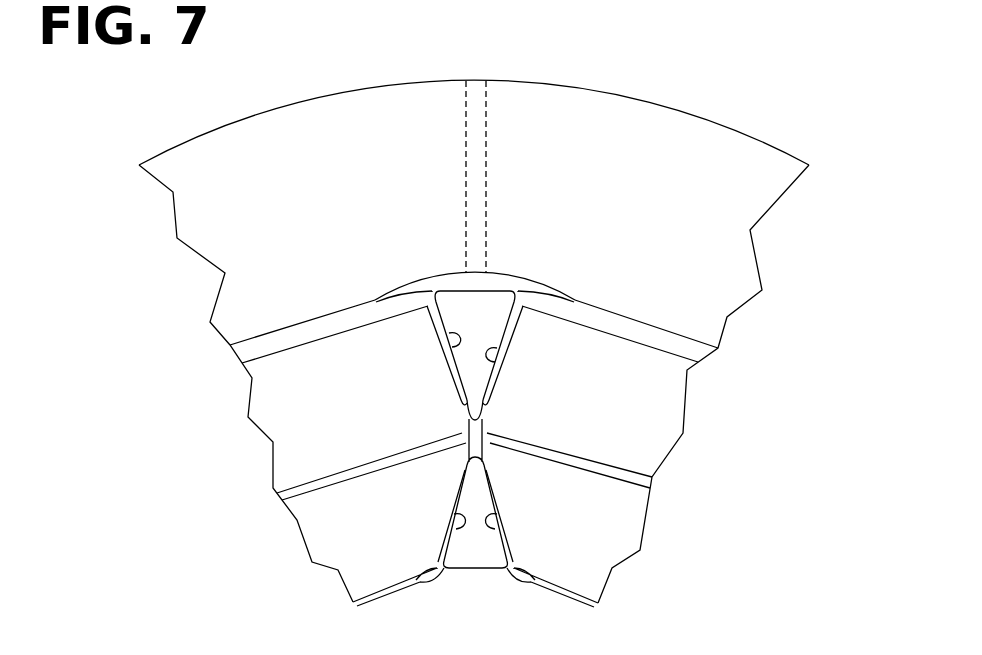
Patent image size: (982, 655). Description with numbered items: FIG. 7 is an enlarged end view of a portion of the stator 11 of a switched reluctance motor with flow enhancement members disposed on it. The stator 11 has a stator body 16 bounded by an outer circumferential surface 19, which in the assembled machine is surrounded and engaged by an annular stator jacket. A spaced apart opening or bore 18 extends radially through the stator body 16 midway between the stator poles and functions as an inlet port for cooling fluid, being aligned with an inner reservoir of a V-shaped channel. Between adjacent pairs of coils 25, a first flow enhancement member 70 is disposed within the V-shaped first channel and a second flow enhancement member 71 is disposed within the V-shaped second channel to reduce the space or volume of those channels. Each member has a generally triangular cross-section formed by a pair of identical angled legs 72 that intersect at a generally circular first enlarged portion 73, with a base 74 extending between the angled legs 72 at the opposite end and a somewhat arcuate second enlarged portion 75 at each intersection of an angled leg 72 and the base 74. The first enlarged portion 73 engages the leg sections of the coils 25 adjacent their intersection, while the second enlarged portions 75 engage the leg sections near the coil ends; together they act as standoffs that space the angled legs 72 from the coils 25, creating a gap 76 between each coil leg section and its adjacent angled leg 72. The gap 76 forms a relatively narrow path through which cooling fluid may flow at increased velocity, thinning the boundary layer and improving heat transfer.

The stator 11 is at (503, 344).
The stator body 16 is at (740, 220).
The bores 18 is at (487, 123).
The outer circumferential surface 19 is at (686, 109).
The coils 25 is at (300, 357).
The first flow enhancement members 70 is at (478, 560).
The second flow enhancement members 71 is at (484, 302).
The angled legs 72 is at (456, 334).
The first enlarged portion 73 is at (487, 447).
The base 74 is at (447, 291).
The second enlarged portions 75 is at (428, 292).
The gap 76 is at (507, 330).